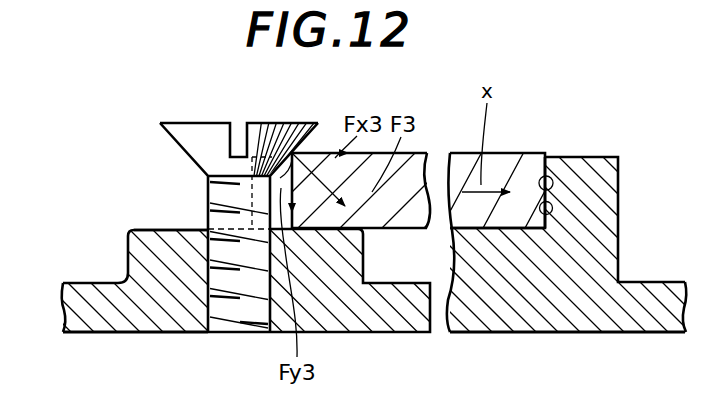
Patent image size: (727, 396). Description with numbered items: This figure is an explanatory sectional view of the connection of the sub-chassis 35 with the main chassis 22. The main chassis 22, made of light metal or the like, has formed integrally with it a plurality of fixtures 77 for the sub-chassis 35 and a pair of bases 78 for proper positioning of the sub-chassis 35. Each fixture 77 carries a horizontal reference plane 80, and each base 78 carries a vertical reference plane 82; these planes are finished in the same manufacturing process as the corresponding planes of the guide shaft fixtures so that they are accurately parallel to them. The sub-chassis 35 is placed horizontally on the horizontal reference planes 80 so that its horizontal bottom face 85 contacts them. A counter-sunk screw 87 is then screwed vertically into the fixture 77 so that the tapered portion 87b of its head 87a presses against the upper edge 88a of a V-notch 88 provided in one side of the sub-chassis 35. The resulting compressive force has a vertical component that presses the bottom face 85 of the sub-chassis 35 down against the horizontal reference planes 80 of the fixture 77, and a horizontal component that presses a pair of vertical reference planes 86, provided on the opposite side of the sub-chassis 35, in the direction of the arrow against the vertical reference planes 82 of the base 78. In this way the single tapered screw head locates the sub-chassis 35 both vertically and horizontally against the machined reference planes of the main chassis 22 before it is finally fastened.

The main chassis 22 is at (105, 318).
The sub-chassis 35 is at (467, 163).
The fixture for the sub-chassis 77 is at (140, 253).
The base for proper positioning of the sub-chassis 78 is at (592, 180).
The horizontal reference plane 80 is at (177, 229).
The vertical reference plane 82 is at (562, 196).
The horizontal bottom face 85 is at (403, 228).
The vertical reference plane 86 is at (531, 198).
The counter-sunk screw 87 is at (208, 133).
The head 87a is at (268, 155).
The tapered portion 87b is at (168, 142).
The V-notch 88 is at (291, 122).
The upper edge of the V-notch 88a is at (310, 144).